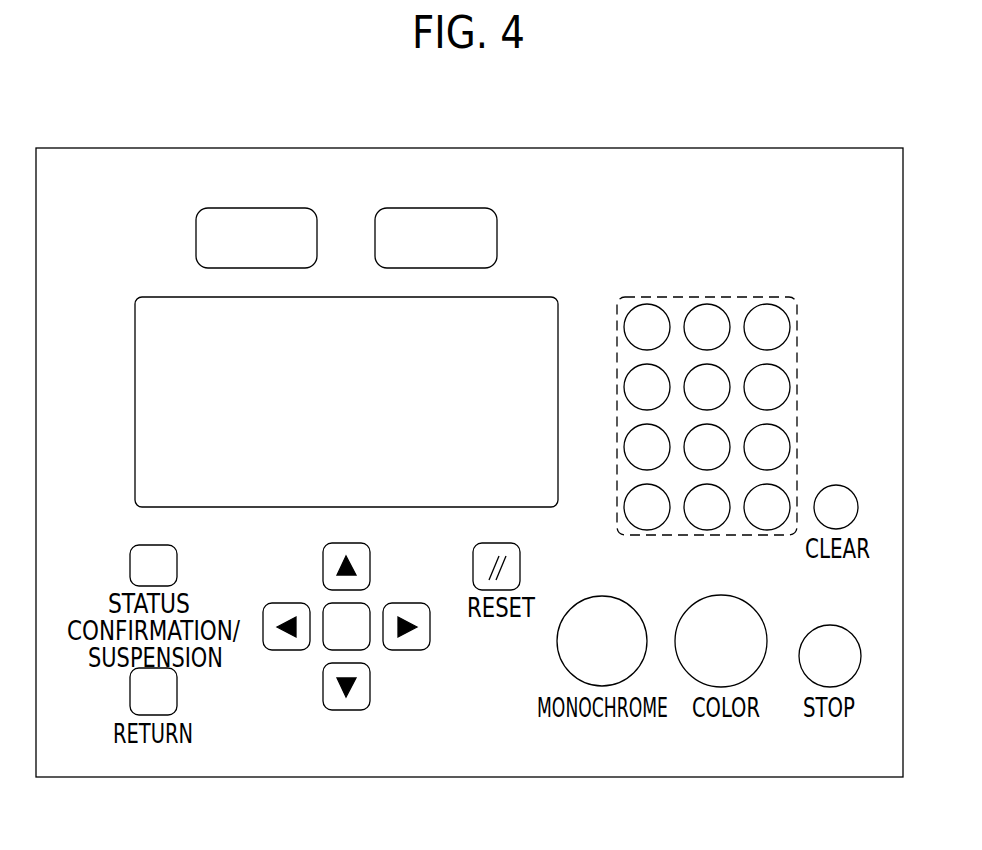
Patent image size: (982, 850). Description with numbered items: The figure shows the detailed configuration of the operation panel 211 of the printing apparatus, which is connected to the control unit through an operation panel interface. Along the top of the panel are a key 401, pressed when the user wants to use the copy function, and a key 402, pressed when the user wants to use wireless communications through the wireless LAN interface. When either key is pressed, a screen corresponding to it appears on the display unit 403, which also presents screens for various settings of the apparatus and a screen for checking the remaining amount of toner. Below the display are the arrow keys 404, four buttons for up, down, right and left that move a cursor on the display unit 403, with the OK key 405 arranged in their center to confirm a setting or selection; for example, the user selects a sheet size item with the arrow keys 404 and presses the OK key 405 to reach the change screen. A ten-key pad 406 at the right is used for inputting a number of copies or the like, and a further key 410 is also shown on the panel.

The operation panel 211 is at (803, 148).
The key 401 is at (262, 208).
The key 402 is at (440, 208).
The display unit 403 is at (135, 362).
The arrow keys 404 is at (371, 686).
The OK key 405 is at (393, 592).
The ten-key pad 406 is at (755, 297).
The status confirmation/suspension key 410 is at (130, 563).